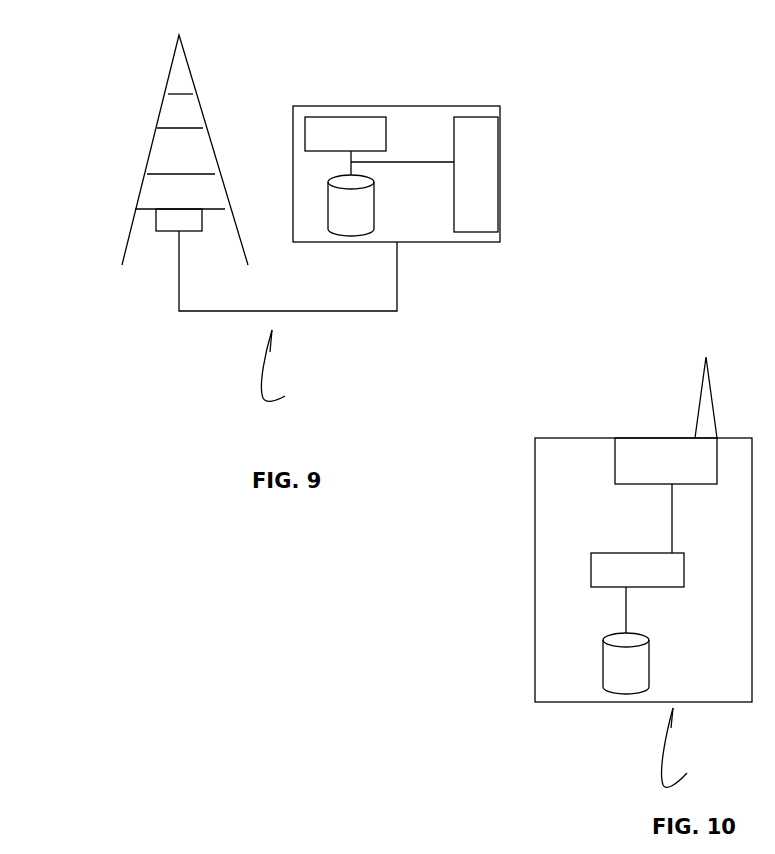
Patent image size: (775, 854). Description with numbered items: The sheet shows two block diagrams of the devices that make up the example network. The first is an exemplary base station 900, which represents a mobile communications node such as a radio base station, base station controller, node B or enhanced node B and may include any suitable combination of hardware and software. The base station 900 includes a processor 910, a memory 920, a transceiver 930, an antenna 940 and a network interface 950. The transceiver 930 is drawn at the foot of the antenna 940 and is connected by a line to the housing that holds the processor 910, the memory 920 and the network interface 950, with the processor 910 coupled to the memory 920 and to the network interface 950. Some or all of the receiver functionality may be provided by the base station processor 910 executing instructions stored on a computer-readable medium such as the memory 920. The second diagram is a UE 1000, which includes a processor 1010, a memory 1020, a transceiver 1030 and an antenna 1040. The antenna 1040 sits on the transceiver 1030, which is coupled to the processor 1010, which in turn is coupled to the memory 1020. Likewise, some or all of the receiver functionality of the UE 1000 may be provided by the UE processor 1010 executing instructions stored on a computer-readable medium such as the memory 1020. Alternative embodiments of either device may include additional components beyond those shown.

In FIG. 9, the base station 900 is at (299, 366).
In FIG. 9, the processor 910 is at (350, 129).
In FIG. 9, the memory 920 is at (352, 208).
In FIG. 9, the transceiver 930 is at (167, 232).
In FIG. 9, the antenna 940 is at (155, 138).
In FIG. 9, the network interface 950 is at (477, 232).
In FIG. 10, the user equipment 1000 is at (647, 612).
In FIG. 10, the processor 1010 is at (591, 564).
In FIG. 10, the memory 1020 is at (626, 667).
In FIG. 10, the transceiver 1030 is at (627, 461).
In FIG. 10, the antenna 1040 is at (697, 404).